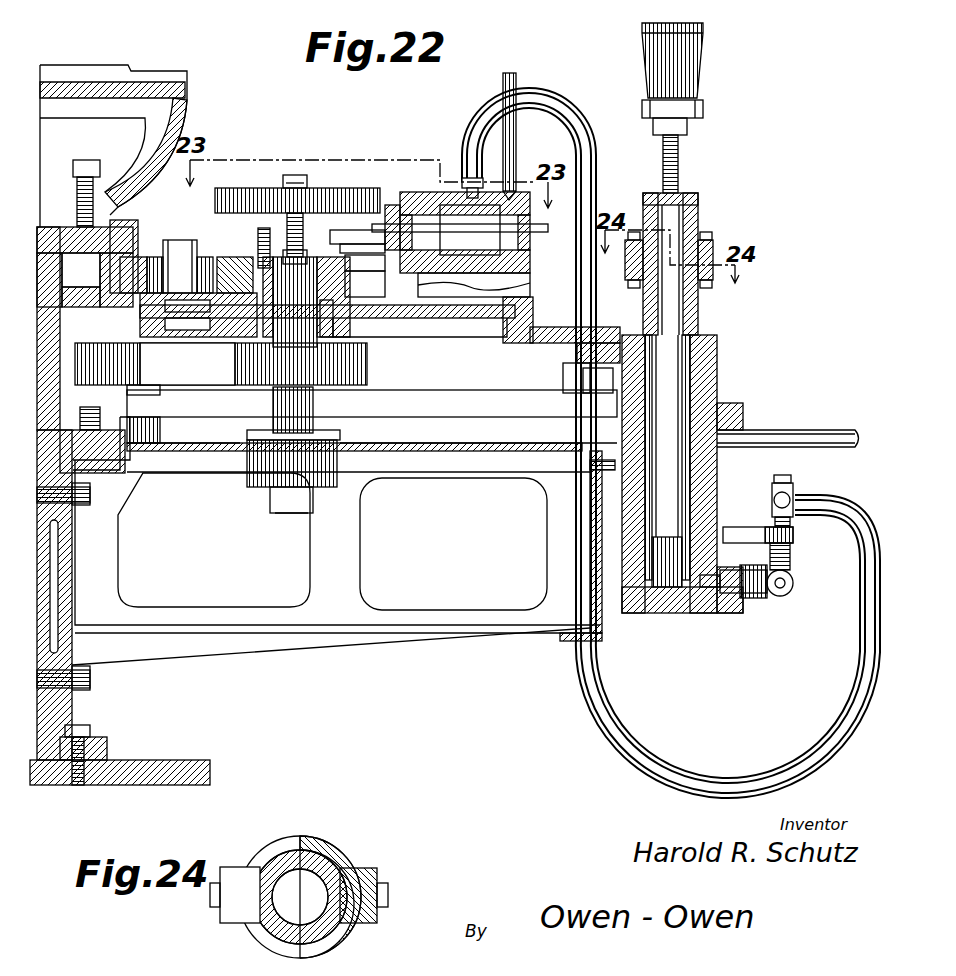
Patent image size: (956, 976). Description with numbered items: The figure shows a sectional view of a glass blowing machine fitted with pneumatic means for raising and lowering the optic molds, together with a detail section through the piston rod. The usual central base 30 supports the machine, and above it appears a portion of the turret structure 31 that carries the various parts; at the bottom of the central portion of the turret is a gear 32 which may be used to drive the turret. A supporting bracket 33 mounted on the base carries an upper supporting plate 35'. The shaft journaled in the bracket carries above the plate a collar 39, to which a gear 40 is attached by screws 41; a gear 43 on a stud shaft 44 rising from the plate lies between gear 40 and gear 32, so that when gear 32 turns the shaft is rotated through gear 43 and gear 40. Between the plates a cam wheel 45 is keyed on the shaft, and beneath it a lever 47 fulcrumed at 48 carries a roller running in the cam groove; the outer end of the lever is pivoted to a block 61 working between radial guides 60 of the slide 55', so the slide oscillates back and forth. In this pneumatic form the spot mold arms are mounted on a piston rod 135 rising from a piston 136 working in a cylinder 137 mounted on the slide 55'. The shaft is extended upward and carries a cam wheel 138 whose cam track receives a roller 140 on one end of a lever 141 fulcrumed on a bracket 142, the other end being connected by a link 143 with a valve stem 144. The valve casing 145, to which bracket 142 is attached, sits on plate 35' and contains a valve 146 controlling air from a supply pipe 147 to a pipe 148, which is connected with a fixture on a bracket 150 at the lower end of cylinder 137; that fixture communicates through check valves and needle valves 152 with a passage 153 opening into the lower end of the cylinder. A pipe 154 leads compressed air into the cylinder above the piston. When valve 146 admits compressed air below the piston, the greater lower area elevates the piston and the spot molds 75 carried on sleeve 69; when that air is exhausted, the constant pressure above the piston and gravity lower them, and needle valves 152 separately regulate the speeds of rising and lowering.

In FIG. 22, the central base 30 is at (50, 575).
In FIG. 22, the turret structure 31 is at (188, 102).
In FIG. 22, the gear 32 is at (138, 228).
In FIG. 22, the supporting bracket 33 is at (383, 632).
In FIG. 22, the upper supporting plate 35' is at (380, 334).
In FIG. 22, the collar 39 is at (253, 257).
In FIG. 22, the gear 40 is at (245, 267).
In FIG. 22, the screws 41 is at (270, 240).
In FIG. 22, the gear 43 is at (140, 293).
In FIG. 22, the stud shaft 44 is at (175, 323).
In FIG. 22, the cam wheel 45 is at (370, 357).
In FIG. 22, the lever 47 is at (395, 407).
In FIG. 22, the fulcrum 48 is at (140, 393).
In FIG. 22, the slide 55' is at (344, 525).
In FIG. 22, the radial guides 60 is at (570, 370).
In FIG. 22, the block 61 is at (583, 378).
In FIG. 22, the sleeve 69 is at (680, 167).
In FIG. 22, the mold proper 75 is at (687, 77).
In FIG. 22, the piston rod 135 is at (690, 307).
In FIG. 24, the piston rod 135 is at (318, 860).
In FIG. 22, the piston 136 is at (665, 593).
In FIG. 22, the cylinder 137 is at (708, 487).
In FIG. 22, the cam wheel 138 is at (258, 203).
In FIG. 22, the roller 140 is at (340, 237).
In FIG. 22, the lever 141 is at (340, 249).
In FIG. 22, the bracket 142 is at (370, 280).
In FIG. 22, the link 143 is at (372, 215).
In FIG. 22, the valve stem 144 is at (372, 258).
In FIG. 22, the valve casing 145 is at (482, 275).
In FIG. 22, the valve 146 is at (432, 210).
In FIG. 22, the supply pipe 147 is at (516, 84).
In FIG. 22, the pipe 148 is at (586, 115).
In FIG. 22, the bracket 150 is at (743, 530).
In FIG. 22, the needle valves 152 is at (797, 583).
In FIG. 22, the passage 153 is at (717, 577).
In FIG. 22, the pipe 154 is at (780, 430).